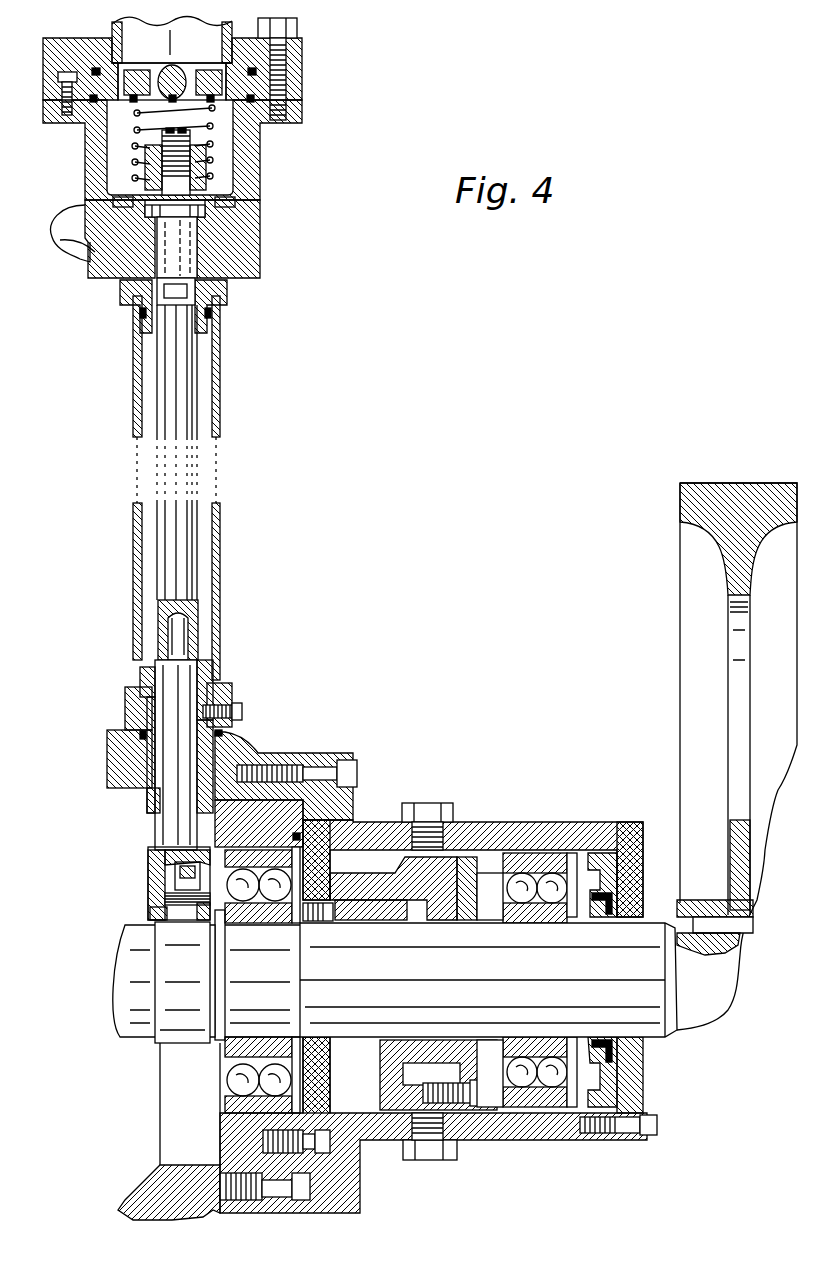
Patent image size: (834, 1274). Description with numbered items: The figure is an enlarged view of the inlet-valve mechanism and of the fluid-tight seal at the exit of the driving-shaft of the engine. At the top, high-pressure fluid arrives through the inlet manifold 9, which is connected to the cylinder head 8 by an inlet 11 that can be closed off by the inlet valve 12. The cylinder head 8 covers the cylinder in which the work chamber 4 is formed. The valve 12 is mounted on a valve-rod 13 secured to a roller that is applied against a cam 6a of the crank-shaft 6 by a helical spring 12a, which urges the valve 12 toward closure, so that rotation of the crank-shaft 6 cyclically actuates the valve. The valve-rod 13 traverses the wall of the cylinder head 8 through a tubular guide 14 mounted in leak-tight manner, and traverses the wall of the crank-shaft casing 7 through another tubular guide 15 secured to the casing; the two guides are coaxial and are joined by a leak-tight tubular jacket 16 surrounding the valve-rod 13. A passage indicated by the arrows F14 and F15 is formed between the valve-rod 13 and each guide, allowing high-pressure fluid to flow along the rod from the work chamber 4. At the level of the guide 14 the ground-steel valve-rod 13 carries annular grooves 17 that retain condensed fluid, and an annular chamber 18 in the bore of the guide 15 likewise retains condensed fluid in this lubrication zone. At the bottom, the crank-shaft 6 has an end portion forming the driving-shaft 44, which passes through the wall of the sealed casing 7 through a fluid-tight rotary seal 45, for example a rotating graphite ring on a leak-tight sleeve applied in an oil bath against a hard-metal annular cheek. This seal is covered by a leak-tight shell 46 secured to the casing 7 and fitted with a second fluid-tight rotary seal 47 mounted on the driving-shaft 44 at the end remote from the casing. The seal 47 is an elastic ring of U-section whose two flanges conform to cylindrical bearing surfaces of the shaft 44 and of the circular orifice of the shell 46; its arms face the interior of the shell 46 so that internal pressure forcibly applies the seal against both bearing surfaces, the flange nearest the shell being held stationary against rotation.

The work chamber 4 is at (95, 245).
The crank-shaft 6 is at (125, 1030).
The cam 6a is at (178, 1028).
The casing 7 is at (298, 753).
The cylinder head 8 is at (258, 216).
The inlet manifold 9 is at (148, 40).
The inlet 11 is at (235, 134).
The inlet valve 12 is at (140, 184).
The helical spring 12a is at (196, 172).
The valve-rod 13 is at (180, 352).
The tubular guide 14 is at (227, 300).
The tubular guide 15 is at (235, 697).
The tubular jacket 16 is at (218, 530).
The annular grooves 17 is at (140, 303).
The annular chamber 18 is at (150, 715).
The driving-shaft 44 is at (640, 1010).
The fluid-tight rotary seal 45 is at (370, 870).
The leak-tight shell 46 is at (545, 832).
The second fluid-tight rotary seal 47 is at (605, 903).
The arrow F14 is at (203, 231).
The arrow F15 is at (202, 659).